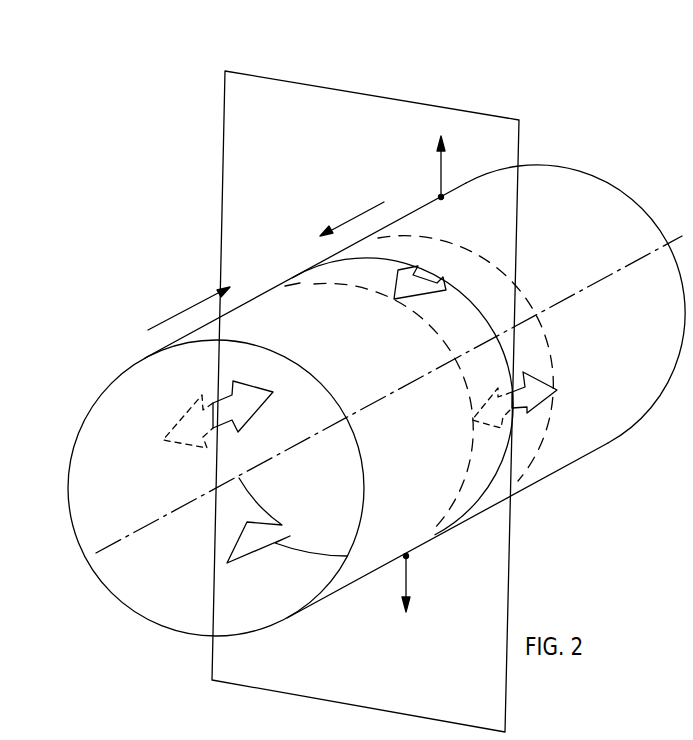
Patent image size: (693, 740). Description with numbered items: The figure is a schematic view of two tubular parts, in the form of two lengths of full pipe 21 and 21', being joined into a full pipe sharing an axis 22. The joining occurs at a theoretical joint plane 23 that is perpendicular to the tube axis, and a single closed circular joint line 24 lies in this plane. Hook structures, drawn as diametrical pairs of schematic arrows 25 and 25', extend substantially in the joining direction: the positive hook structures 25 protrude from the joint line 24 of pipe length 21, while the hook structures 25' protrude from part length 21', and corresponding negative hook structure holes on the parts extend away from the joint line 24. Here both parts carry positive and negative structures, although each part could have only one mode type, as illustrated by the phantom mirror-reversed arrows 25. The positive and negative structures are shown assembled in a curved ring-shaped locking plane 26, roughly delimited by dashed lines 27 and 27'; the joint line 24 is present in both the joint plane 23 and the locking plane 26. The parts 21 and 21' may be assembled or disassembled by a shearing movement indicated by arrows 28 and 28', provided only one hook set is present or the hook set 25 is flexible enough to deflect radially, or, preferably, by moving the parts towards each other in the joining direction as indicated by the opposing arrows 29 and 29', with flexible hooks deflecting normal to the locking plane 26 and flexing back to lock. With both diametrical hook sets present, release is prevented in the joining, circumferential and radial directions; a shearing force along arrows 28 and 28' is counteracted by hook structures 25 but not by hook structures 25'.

The pipe length 21 is at (389, 400).
The pipe length 21' is at (575, 304).
The axis 22 is at (88, 564).
The joint plane 23 is at (318, 88).
The joint line 24 is at (480, 309).
The hook structures 25 is at (375, 410).
The hook structures 25' is at (336, 432).
The locking plane 26 is at (510, 310).
The dashed line 27 is at (393, 406).
The dashed line 27' is at (465, 343).
The arrow 28 is at (423, 584).
The arrow 28' is at (465, 166).
The arrow 29 is at (189, 303).
The arrow 29' is at (352, 207).